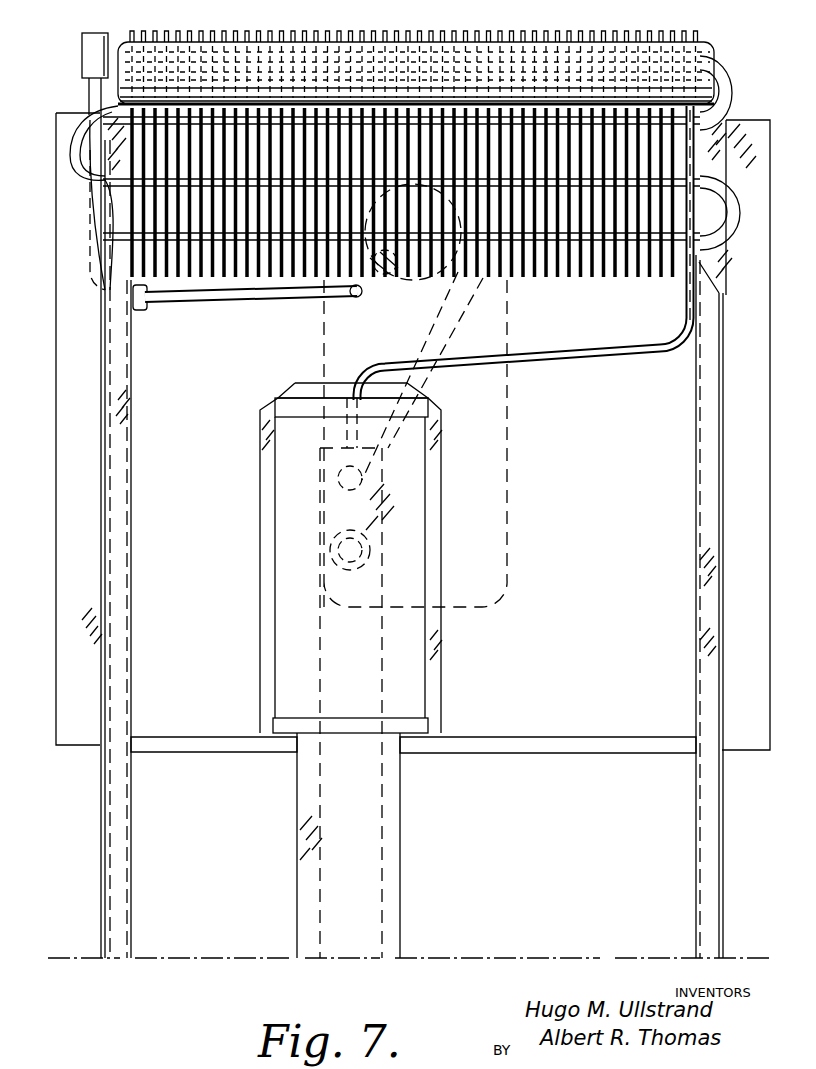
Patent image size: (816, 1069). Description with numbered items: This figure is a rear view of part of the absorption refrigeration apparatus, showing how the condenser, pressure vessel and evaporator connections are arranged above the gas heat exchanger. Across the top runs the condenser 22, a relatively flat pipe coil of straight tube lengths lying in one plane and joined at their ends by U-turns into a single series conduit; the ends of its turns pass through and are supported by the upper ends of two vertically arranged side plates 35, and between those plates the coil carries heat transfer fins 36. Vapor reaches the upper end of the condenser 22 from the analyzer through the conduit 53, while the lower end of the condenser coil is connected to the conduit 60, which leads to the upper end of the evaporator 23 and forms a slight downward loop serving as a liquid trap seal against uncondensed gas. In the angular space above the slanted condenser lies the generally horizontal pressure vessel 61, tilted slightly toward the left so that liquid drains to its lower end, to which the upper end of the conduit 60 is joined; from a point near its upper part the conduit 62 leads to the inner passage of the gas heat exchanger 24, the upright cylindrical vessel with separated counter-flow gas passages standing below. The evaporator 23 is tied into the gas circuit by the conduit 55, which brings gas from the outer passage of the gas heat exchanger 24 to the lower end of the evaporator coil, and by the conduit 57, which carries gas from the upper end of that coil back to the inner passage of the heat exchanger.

The condenser 22 is at (429, 155).
The evaporator 23 is at (525, 551).
The gas heat exchanger 24 is at (383, 902).
The side plates 35 is at (131, 630).
The heat transfer fins 36 is at (305, 40).
The conduit 53 is at (92, 97).
The conduit 55 is at (362, 558).
The conduit 57 is at (431, 343).
The conduit 60 is at (90, 200).
The pressure vessel 61 is at (524, 44).
The conduit 62 is at (704, 47).